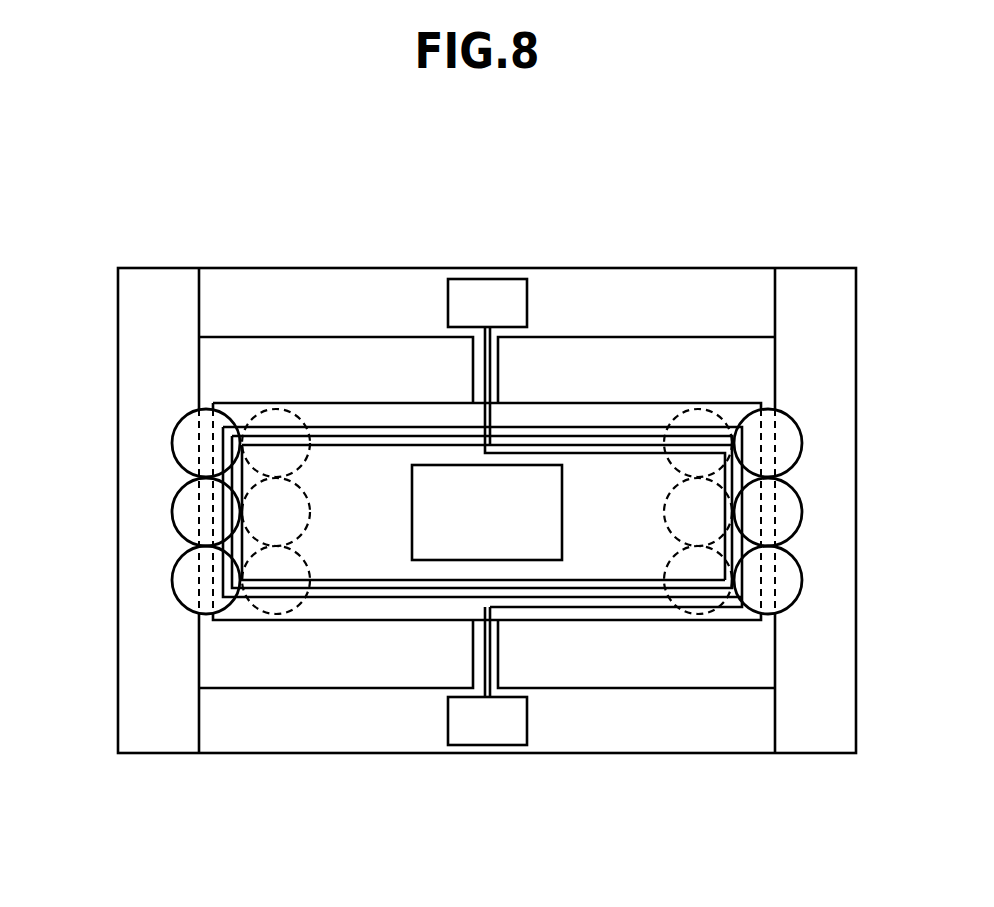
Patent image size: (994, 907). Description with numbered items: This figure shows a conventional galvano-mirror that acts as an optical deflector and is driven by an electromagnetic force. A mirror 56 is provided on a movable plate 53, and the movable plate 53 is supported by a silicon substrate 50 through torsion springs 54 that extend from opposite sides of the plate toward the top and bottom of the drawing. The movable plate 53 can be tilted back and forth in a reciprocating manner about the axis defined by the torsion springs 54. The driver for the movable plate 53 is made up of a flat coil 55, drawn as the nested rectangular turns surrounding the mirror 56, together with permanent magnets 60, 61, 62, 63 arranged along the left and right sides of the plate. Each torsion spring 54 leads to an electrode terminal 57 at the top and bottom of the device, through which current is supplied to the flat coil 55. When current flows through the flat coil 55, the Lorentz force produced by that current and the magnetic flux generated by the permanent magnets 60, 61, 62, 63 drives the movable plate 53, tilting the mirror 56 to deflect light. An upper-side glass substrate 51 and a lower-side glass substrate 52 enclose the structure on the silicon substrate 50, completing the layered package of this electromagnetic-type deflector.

The silicon substrate 50 is at (718, 296).
The upper-side glass substrate 51 is at (140, 332).
The lower-side glass substrate 52 is at (302, 337).
The movable plate 53 is at (388, 403).
The torsion springs 54 is at (500, 375).
The flat coil 55 is at (407, 597).
The mirror 56 is at (523, 497).
The electrode terminal 57 is at (489, 296).
The permanent magnet 60 is at (183, 582).
The permanent magnet 61 is at (297, 465).
The permanent magnet 62 is at (677, 465).
The permanent magnet 63 is at (788, 582).